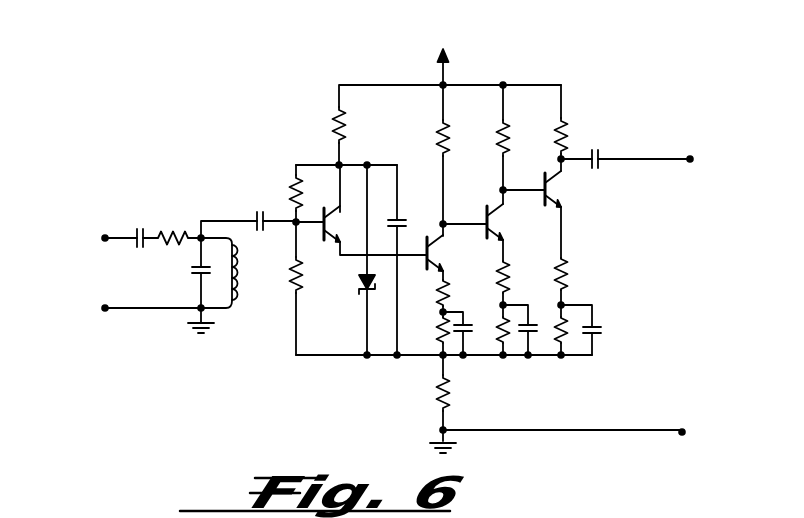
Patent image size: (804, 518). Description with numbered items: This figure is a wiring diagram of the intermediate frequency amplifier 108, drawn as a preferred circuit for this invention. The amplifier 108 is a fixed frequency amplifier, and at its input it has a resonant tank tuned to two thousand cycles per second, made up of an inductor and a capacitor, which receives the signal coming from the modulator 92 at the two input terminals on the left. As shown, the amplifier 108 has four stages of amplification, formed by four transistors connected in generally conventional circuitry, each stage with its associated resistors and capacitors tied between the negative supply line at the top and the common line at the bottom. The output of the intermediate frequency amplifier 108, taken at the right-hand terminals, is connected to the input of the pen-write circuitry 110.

The modulator 92 is at (73, 279).
The intermediate frequency amplifier 108 is at (342, 236).
The pen-write circuitry 110 is at (597, 293).